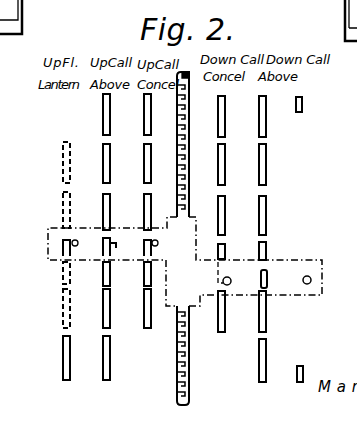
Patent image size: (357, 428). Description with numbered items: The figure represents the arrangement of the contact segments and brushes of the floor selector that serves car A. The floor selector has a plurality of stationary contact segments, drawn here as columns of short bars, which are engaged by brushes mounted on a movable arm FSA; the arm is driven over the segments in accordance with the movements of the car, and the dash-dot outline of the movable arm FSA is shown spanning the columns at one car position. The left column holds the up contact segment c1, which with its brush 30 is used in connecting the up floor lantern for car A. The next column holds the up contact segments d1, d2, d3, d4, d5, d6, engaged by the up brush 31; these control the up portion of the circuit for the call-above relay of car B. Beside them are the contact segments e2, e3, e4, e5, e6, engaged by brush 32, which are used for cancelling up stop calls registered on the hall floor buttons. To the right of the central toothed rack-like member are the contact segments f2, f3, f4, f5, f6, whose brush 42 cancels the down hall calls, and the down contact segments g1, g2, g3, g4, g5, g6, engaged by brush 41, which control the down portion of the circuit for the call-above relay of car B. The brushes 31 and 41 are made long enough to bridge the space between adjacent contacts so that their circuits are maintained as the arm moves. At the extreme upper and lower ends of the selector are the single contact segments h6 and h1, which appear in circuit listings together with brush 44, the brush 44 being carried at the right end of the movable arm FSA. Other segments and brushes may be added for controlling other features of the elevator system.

The up contact segment c1 is at (70, 362).
The up contact segment d1 is at (110, 362).
The up contact segment d2 is at (115, 312).
The up contact segment d3 is at (110, 278).
The up contact segment d4 is at (110, 214).
The up contact segment d5 is at (110, 166).
The up contact segment d6 is at (110, 120).
The contact segment e2 is at (155, 312).
The contact segment e3 is at (155, 274).
The contact segment e4 is at (151, 213).
The contact segment e5 is at (151, 165).
The contact segment e6 is at (151, 120).
The contact segment f2 is at (229, 314).
The contact segment f3 is at (225, 253).
The contact segment f4 is at (225, 215).
The contact segment f5 is at (225, 166).
The contact segment f6 is at (230, 119).
The down contact segment g1 is at (266, 362).
The down contact segment g2 is at (266, 318).
The down contact segment g3 is at (266, 250).
The down contact segment g4 is at (266, 214).
The down contact segment g5 is at (266, 166).
The down contact segment g6 is at (266, 121).
The contact segment h1 is at (297, 372).
The contact segment h6 is at (302, 110).
The brush 30 is at (77, 246).
The up brush 31 is at (114, 249).
The brush 32 is at (157, 246).
The brush 41 is at (267, 278).
The brush 42 is at (230, 278).
The brush 44 is at (311, 280).
The movable arm FSA is at (313, 262).